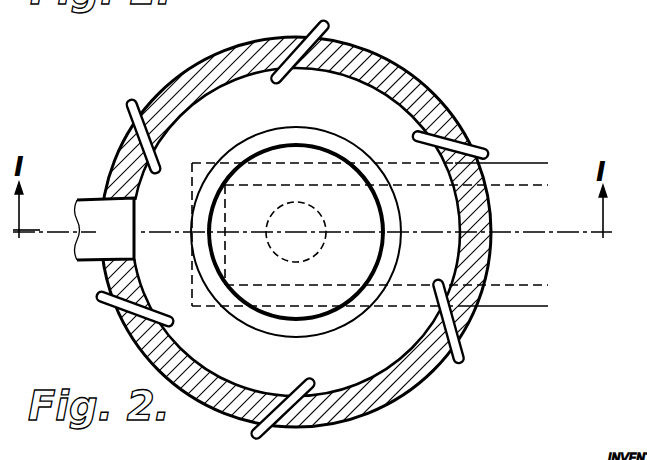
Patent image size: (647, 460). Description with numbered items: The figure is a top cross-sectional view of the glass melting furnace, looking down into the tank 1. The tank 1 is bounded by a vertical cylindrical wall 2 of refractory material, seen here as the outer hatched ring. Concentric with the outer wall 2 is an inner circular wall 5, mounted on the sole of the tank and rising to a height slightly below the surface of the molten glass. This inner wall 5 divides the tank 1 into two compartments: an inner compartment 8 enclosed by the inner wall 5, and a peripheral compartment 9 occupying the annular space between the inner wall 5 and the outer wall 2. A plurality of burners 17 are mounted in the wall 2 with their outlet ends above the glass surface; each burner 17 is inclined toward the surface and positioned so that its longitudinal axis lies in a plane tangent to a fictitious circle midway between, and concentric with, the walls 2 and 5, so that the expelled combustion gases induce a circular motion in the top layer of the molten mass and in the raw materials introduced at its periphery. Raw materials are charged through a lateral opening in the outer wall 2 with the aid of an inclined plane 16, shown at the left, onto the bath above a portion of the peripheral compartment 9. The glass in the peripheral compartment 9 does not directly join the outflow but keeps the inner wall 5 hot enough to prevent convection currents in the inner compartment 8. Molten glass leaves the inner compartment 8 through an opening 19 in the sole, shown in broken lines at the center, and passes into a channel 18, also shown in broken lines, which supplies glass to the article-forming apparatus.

The tank 1 is at (418, 73).
The vertical cylindrical wall 2 is at (446, 110).
The inner circular wall 5 is at (255, 147).
The inner compartment 8 is at (283, 176).
The peripheral compartment 9 is at (306, 121).
The inclined plane 16 is at (94, 196).
The burners 17 is at (317, 27).
The channel 18 is at (505, 187).
The opening 19 is at (303, 217).